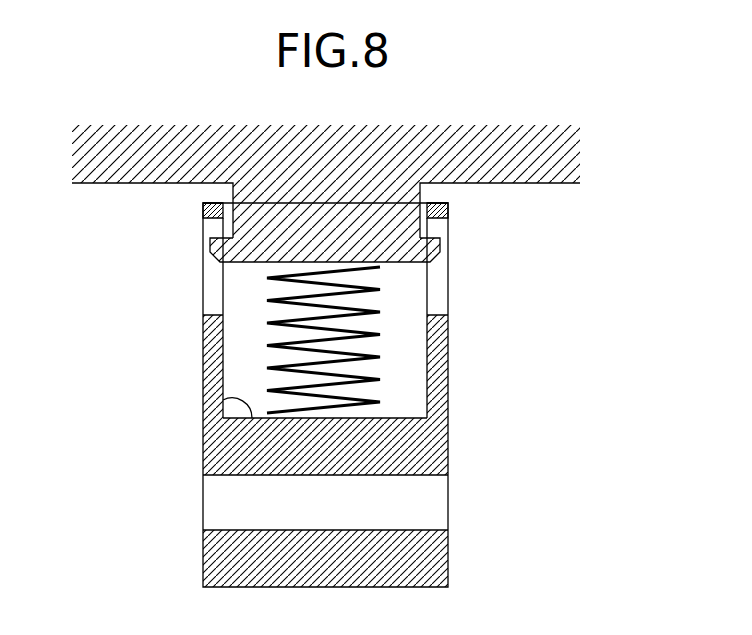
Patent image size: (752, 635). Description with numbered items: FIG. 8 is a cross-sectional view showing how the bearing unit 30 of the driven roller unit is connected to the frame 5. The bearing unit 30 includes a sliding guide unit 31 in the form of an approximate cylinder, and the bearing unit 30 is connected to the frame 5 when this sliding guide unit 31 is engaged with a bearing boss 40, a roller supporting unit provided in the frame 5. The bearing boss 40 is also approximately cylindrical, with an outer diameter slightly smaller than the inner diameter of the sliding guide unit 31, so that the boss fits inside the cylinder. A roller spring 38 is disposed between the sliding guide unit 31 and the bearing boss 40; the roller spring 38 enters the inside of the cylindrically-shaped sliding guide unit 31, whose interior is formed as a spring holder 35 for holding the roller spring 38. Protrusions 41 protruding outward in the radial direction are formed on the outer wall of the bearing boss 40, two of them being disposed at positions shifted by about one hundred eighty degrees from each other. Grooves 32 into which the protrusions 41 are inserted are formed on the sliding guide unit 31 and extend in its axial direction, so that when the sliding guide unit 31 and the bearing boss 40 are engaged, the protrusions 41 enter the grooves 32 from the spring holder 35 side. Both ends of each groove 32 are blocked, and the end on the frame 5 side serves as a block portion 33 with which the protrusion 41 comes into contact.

The frame 5 is at (115, 183).
The bearing unit 30 is at (202, 445).
The sliding guide unit 31 is at (202, 348).
The groove 32 is at (437, 316).
The block portion 33 is at (429, 219).
The spring holder 35 is at (212, 406).
The roller spring 38 is at (282, 299).
The bearing boss 40 is at (423, 193).
The protrusion 41 is at (438, 258).